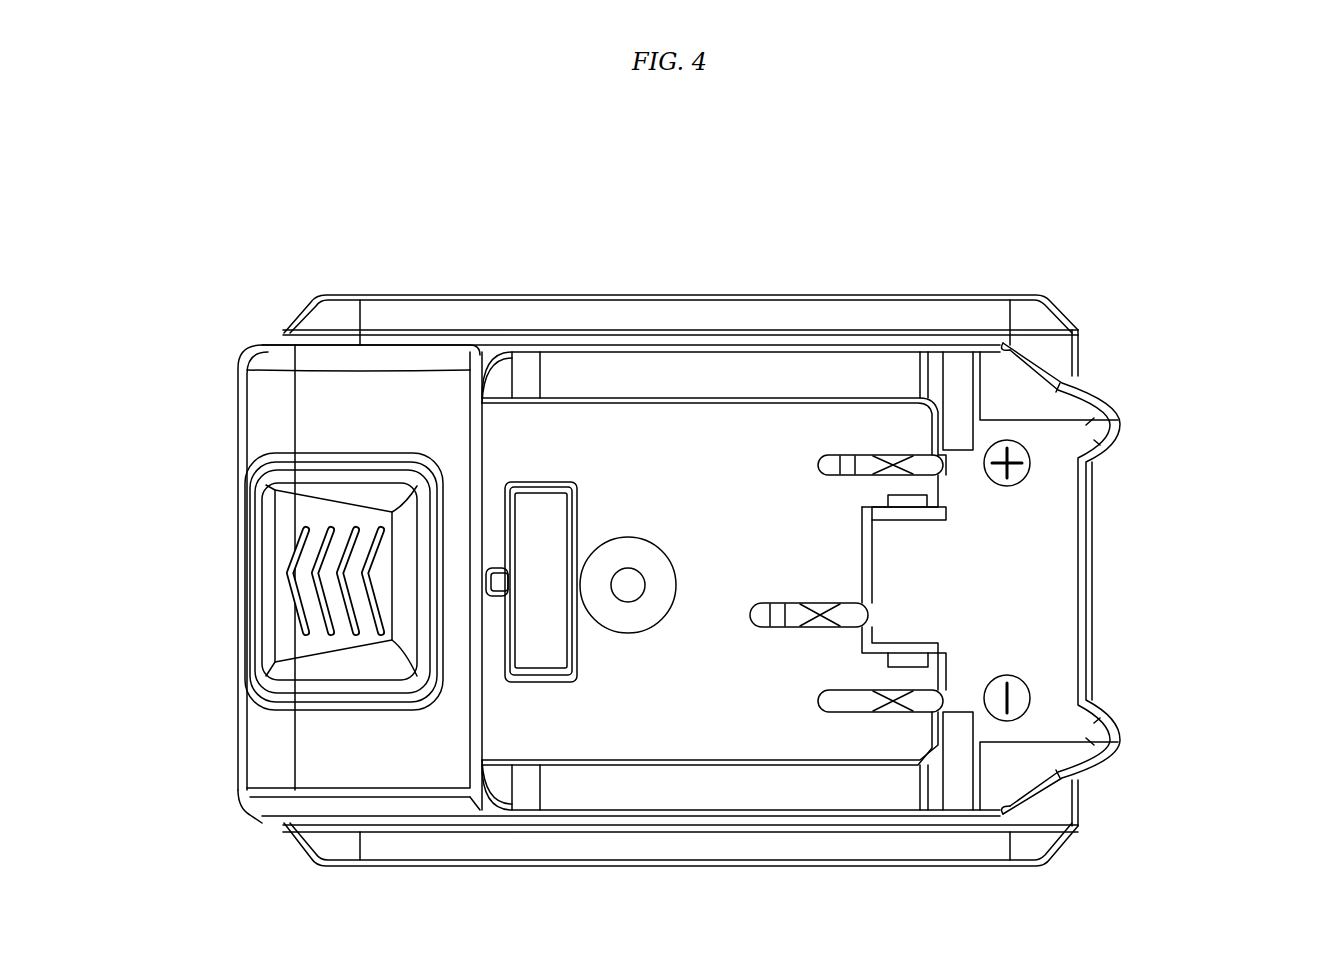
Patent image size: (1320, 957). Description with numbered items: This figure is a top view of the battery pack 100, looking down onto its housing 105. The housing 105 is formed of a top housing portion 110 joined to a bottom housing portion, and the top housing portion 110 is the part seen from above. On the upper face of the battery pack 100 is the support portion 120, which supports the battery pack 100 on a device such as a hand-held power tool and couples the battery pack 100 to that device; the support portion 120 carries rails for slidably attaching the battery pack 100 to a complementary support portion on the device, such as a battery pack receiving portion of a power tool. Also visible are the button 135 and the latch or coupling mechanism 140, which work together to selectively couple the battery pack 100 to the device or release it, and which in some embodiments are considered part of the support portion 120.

The battery pack 100 is at (1167, 180).
The housing 105 is at (1137, 348).
The top housing portion 110 is at (237, 761).
The support portion 120 is at (1030, 590).
The button 135 is at (277, 612).
The coupling mechanism 140 is at (579, 632).